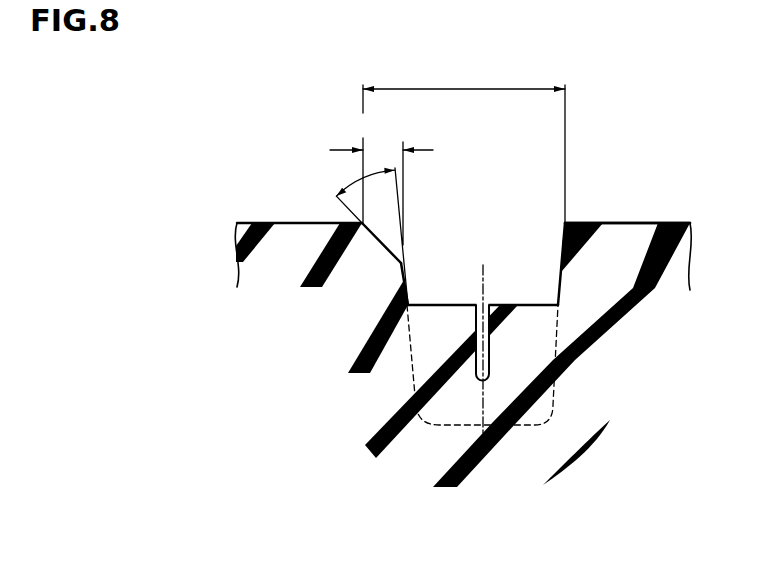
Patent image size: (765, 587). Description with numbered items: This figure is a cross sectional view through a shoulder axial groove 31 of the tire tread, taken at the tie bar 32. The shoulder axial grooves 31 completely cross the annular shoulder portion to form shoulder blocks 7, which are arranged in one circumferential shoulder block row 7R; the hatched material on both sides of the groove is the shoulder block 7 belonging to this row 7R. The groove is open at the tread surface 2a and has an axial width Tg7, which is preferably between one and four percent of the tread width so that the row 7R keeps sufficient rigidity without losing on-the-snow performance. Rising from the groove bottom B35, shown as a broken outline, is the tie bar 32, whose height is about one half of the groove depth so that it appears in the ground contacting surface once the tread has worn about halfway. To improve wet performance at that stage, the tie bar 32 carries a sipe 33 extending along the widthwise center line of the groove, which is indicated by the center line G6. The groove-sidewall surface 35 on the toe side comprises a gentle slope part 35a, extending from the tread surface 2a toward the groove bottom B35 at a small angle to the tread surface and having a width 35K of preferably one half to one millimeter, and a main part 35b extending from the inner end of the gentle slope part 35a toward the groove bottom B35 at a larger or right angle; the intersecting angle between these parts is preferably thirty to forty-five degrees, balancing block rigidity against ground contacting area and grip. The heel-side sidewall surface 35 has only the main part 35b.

The tread surface 2a is at (647, 221).
The shoulder block 7 is at (335, 372).
The shoulder block row 7R is at (700, 377).
The shoulder axial groove 31 is at (535, 264).
The tie bar 32 is at (483, 338).
The sipe 33 is at (477, 304).
The groove-sidewall surface 35 is at (295, 301).
The gentle slope part 35a is at (398, 258).
The main part 35b is at (417, 388).
The width of the gentle slope part 35K is at (381, 212).
The groove bottom B35 is at (457, 422).
The center line G6 is at (480, 340).
The axial width of the shoulder axial groove Tg7 is at (464, 142).